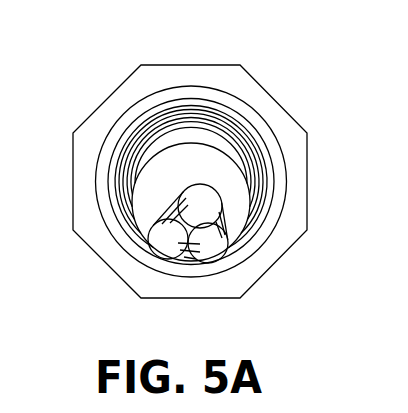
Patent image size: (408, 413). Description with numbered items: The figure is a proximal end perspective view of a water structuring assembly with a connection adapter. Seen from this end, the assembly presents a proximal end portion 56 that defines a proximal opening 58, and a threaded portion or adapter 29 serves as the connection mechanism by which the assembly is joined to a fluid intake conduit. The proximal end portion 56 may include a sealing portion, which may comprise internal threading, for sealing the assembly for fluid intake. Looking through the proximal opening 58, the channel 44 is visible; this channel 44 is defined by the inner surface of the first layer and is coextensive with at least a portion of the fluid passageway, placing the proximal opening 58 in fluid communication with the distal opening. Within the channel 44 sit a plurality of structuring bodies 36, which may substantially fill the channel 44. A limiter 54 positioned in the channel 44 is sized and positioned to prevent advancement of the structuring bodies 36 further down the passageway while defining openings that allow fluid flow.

The threaded portion or adapter 29 is at (257, 81).
The proximal end portion 56 is at (293, 104).
The proximal opening 58 is at (265, 153).
The channel 44 is at (160, 172).
The limiter 54 is at (200, 228).
The structuring bodies 36 is at (206, 246).